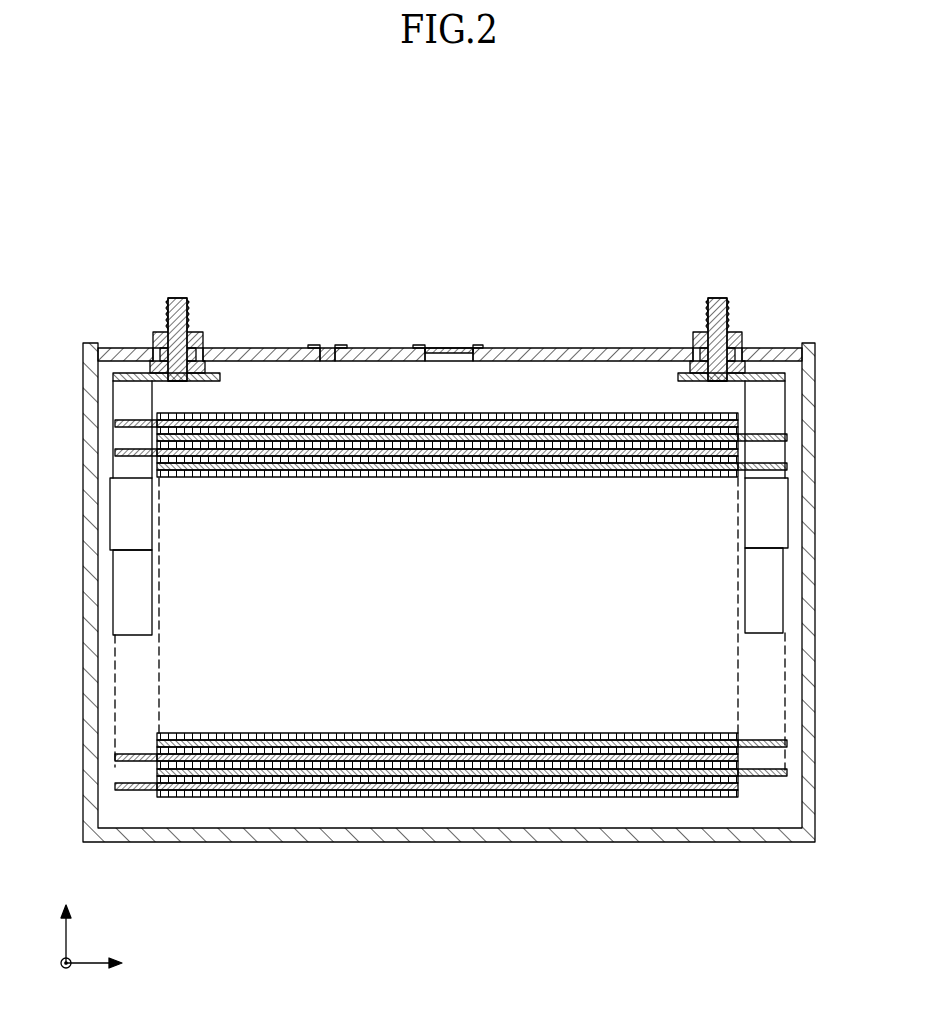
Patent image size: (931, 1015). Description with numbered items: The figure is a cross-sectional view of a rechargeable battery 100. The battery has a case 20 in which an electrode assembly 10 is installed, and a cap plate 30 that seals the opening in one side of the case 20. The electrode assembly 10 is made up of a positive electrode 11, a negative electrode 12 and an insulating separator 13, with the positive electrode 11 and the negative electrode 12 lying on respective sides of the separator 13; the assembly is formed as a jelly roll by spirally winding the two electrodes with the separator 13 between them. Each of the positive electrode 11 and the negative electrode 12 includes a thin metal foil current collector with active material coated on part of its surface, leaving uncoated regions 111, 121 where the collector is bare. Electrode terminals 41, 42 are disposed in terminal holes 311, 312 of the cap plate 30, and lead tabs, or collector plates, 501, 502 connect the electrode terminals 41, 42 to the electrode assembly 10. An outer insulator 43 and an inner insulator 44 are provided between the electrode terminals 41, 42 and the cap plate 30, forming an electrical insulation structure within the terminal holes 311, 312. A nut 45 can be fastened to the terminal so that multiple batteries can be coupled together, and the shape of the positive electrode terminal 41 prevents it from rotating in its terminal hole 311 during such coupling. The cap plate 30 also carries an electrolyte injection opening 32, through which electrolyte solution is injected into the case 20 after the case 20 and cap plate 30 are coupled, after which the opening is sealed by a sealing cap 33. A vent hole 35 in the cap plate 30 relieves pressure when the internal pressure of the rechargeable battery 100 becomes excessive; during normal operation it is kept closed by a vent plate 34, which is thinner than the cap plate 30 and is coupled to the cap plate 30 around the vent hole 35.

The rechargeable battery 100 is at (414, 139).
The electrode assembly 10 is at (447, 669).
The positive electrode 11 is at (260, 790).
The negative electrode 12 is at (325, 776).
The separator 13 is at (455, 767).
The uncoated region 111 is at (137, 790).
The uncoated region 121 is at (765, 776).
The case 20 is at (635, 836).
The cap plate 30 is at (557, 348).
The electrolyte injection opening 32 is at (330, 348).
The sealing cap 33 is at (315, 347).
The vent plate 34 is at (458, 348).
The vent hole 35 is at (443, 363).
The positive electrode terminal 41 is at (172, 298).
The electrode terminal 42 is at (718, 298).
The outer insulator 43 is at (153, 343).
The inner insulator 44 is at (152, 362).
The nut 45 is at (740, 332).
The terminal hole 311 is at (198, 332).
The terminal hole 312 is at (706, 330).
The lead tab 501 is at (92, 428).
The lead tab 502 is at (808, 429).